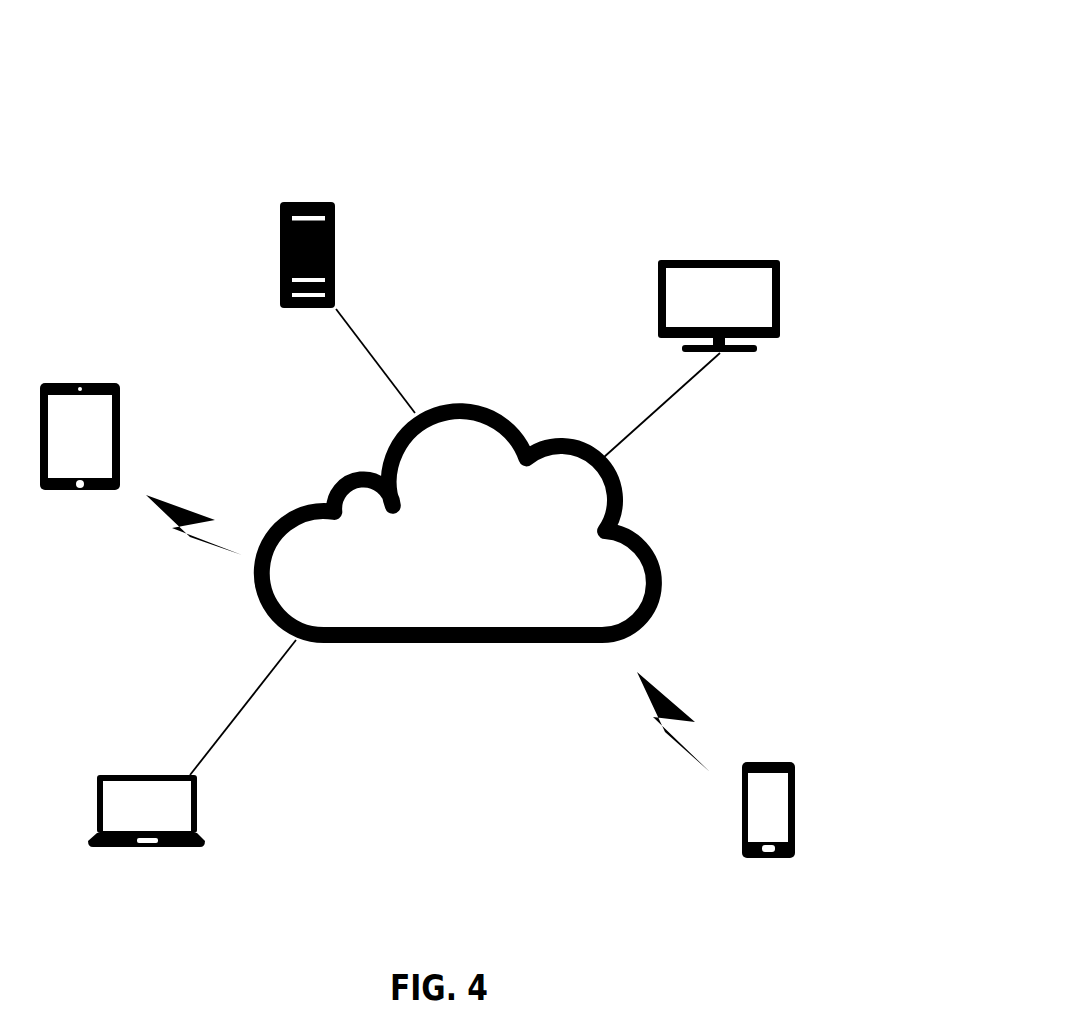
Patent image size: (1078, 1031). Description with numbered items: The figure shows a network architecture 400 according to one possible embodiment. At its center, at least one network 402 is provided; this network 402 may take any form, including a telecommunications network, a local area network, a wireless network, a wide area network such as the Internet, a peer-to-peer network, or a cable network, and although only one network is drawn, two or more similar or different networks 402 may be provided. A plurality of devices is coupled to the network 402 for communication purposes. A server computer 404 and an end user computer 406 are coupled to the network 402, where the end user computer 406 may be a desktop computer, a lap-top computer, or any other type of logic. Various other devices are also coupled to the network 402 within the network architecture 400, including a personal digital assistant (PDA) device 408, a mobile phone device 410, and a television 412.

The network architecture 400 is at (84, 76).
The network 402 is at (468, 645).
The server computer 404 is at (308, 202).
The end user computer 406 is at (142, 775).
The personal digital assistant (PDA) device 408 is at (83, 383).
The mobile phone device 410 is at (761, 762).
The television 412 is at (722, 260).